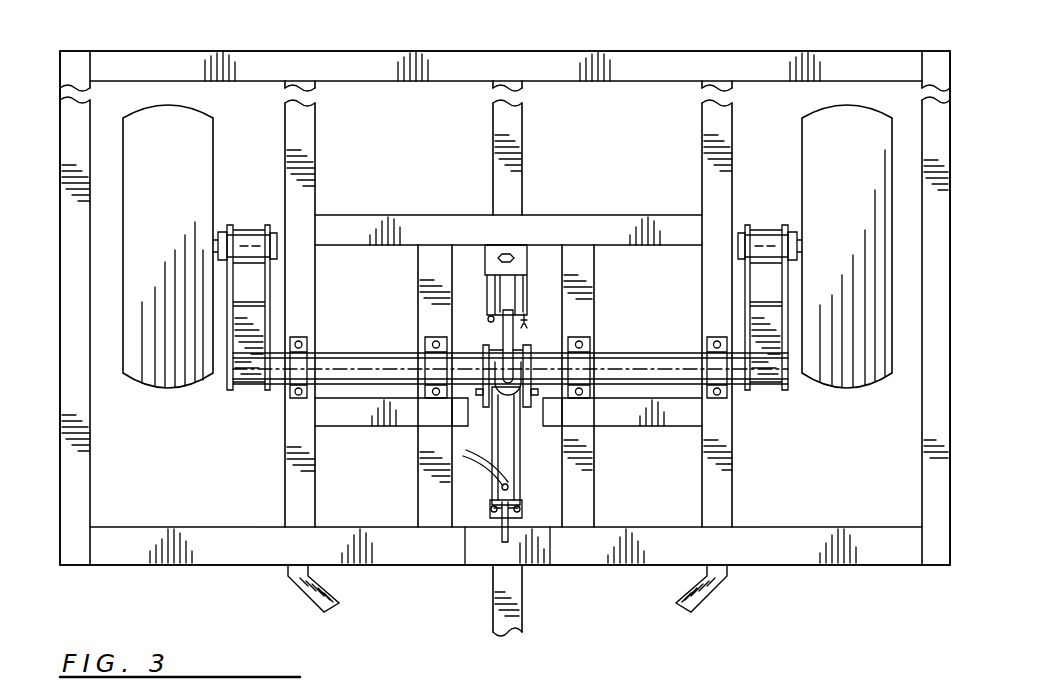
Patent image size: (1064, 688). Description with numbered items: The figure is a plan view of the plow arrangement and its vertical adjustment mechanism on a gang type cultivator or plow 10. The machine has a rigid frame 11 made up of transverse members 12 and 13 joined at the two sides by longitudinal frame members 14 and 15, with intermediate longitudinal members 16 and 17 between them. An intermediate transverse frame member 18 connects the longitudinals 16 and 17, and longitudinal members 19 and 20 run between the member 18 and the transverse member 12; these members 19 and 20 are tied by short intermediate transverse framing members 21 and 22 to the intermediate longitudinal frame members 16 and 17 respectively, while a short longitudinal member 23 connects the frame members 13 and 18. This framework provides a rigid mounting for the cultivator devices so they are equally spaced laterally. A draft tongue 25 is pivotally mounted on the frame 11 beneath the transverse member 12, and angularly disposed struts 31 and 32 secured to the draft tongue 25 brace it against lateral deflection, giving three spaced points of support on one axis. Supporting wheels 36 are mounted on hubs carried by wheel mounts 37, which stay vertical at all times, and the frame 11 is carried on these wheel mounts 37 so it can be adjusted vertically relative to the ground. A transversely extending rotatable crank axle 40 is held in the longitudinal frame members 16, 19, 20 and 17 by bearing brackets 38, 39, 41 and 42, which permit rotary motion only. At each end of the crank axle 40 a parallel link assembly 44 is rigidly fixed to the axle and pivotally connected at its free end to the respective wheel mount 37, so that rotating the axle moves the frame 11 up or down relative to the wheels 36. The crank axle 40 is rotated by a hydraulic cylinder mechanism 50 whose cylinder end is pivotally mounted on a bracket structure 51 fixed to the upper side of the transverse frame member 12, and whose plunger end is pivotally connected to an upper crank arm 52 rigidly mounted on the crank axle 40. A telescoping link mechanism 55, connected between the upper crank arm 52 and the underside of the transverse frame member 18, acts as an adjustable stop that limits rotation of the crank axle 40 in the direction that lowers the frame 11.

The gang type cultivator or plow 10 is at (865, 578).
The rigid frame 11 is at (128, 567).
The transverse member 12 is at (568, 545).
The transverse member 13 is at (708, 62).
The longitudinal frame member 14 is at (82, 492).
The longitudinal frame member 15 is at (926, 477).
The intermediate longitudinal member 16 is at (296, 425).
The intermediate longitudinal member 17 is at (726, 508).
The intermediate transverse frame member 18 is at (590, 235).
The longitudinal member 19 is at (426, 500).
The longitudinal member 20 is at (584, 476).
The short intermediate transverse framing member 21 is at (344, 412).
The short intermediate transverse framing member 22 is at (618, 412).
The short longitudinal member 23 is at (508, 119).
The draft tongue 25 is at (493, 630).
The strut 31 is at (332, 598).
The strut 32 is at (686, 610).
The supporting wheel 36 is at (213, 176).
The wheel mount 37 is at (247, 232).
The bearing bracket 38 is at (302, 366).
The bearing bracket 39 is at (430, 363).
The crank axle 40 is at (358, 350).
The bearing bracket 41 is at (578, 369).
The bearing bracket 42 is at (710, 356).
The parallel link assembly 44 is at (274, 298).
The hydraulic cylinder mechanism 50 is at (512, 440).
The bracket structure 51 is at (500, 541).
The upper crank arm 52 is at (502, 350).
The telescoping link mechanism 55 is at (480, 249).